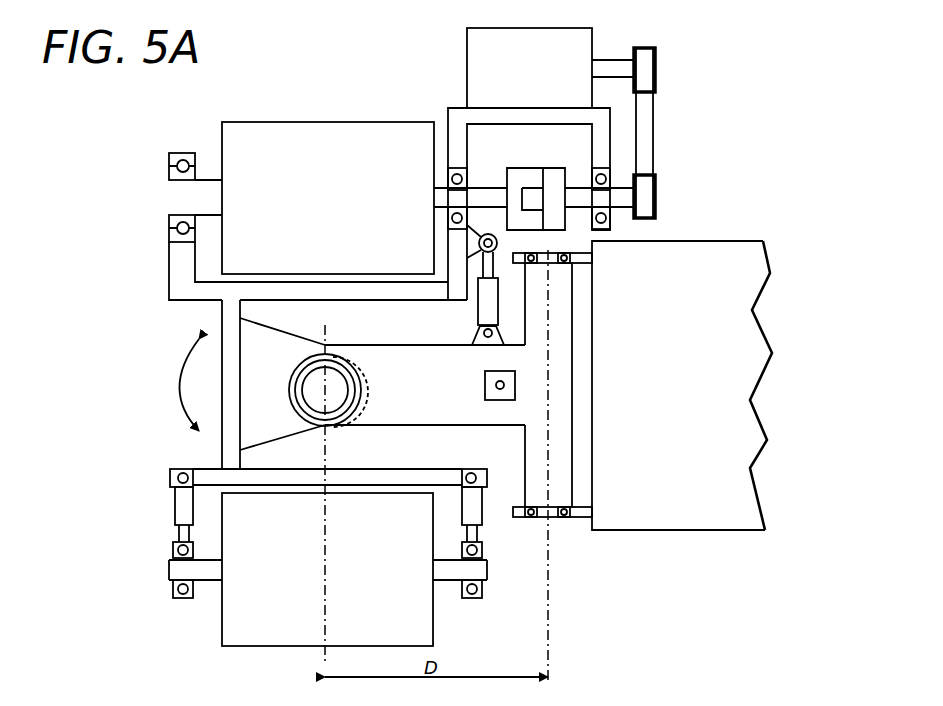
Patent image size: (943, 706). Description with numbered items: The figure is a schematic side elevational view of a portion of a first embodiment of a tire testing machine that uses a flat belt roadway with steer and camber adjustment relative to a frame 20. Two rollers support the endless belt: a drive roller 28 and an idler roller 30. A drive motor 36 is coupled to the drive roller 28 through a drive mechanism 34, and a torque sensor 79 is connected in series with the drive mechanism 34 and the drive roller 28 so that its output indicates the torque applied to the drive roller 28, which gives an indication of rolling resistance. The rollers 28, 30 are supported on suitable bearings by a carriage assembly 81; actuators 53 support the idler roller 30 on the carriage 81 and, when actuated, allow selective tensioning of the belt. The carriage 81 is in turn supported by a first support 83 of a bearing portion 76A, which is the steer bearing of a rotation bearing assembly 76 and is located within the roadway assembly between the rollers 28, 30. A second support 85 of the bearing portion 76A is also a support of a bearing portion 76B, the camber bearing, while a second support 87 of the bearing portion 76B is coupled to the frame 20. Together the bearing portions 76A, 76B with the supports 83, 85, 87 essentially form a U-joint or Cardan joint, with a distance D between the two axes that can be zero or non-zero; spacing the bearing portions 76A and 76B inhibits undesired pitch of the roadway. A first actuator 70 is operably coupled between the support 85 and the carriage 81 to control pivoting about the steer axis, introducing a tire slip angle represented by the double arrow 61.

The frame 20 is at (740, 356).
The drive roller 28 is at (222, 135).
The idler roller 30 is at (222, 620).
The drive mechanism 34 is at (668, 123).
The drive motor 36 is at (470, 55).
The actuators 53 is at (175, 509).
The double arrow 61 is at (171, 394).
The first actuator 70 is at (476, 308).
The rotation bearing assembly 76 is at (556, 582).
The bearing portion 76A is at (338, 412).
The bearing portion 76B is at (556, 522).
The torque sensor 79 is at (535, 168).
The carriage assembly 81 is at (298, 282).
The first support 83 is at (270, 340).
The second support 85 is at (507, 425).
The second support 87 is at (585, 264).